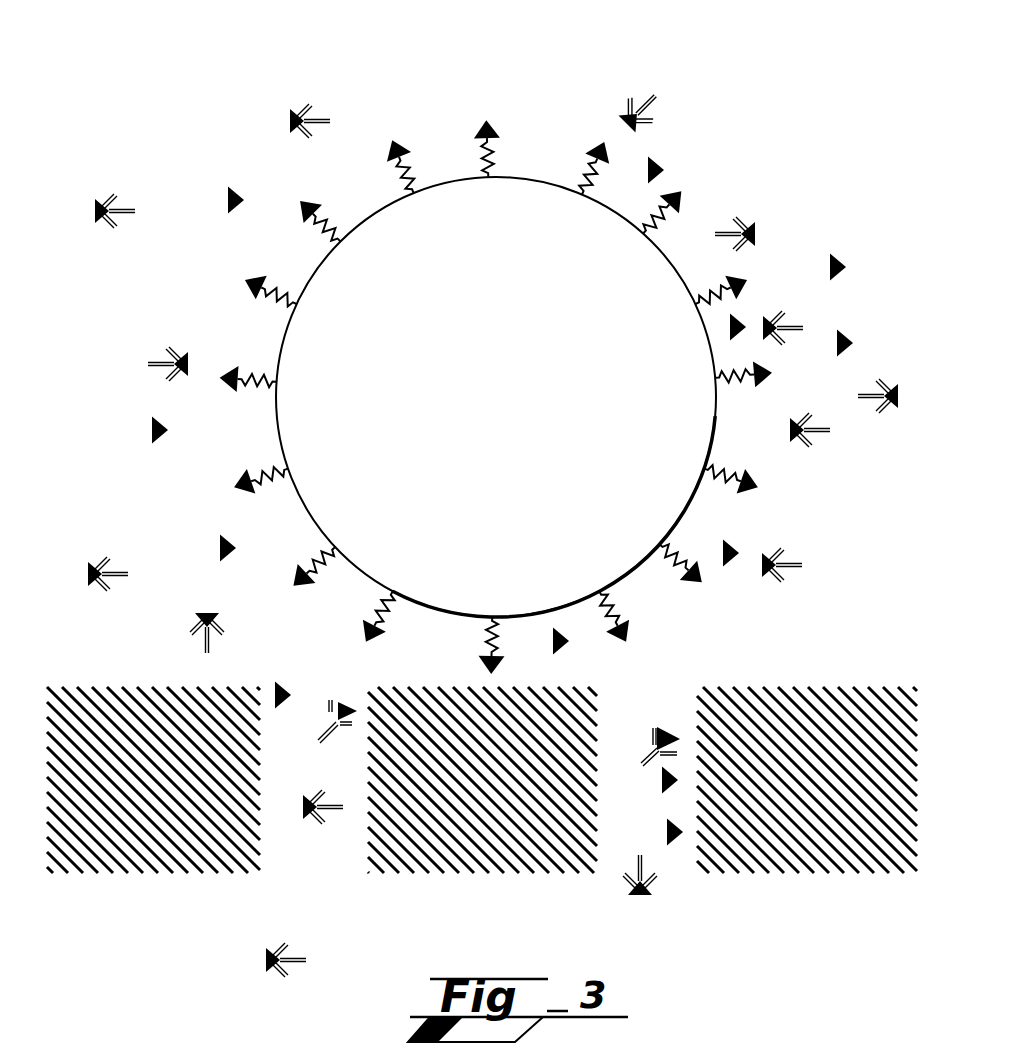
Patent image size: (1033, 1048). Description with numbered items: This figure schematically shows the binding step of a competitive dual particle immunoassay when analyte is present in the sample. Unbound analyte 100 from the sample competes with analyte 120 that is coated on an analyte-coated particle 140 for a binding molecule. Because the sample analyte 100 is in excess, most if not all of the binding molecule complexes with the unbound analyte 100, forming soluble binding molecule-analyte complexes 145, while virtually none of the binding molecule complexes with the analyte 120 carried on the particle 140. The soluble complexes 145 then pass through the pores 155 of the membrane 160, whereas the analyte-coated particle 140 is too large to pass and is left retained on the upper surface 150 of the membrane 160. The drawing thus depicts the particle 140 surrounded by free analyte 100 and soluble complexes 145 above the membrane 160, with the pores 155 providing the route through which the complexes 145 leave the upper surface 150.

The unbound analyte 100 is at (550, 126).
The analyte bound to analyte-coated particle 120 is at (408, 150).
The analyte-coated particle 140 is at (797, 224).
The soluble binding molecule-analyte complexes 145 is at (290, 120).
The upper surface of the membrane 150 is at (576, 686).
The pores of the membrane 155 is at (665, 688).
The membrane 160 is at (840, 687).